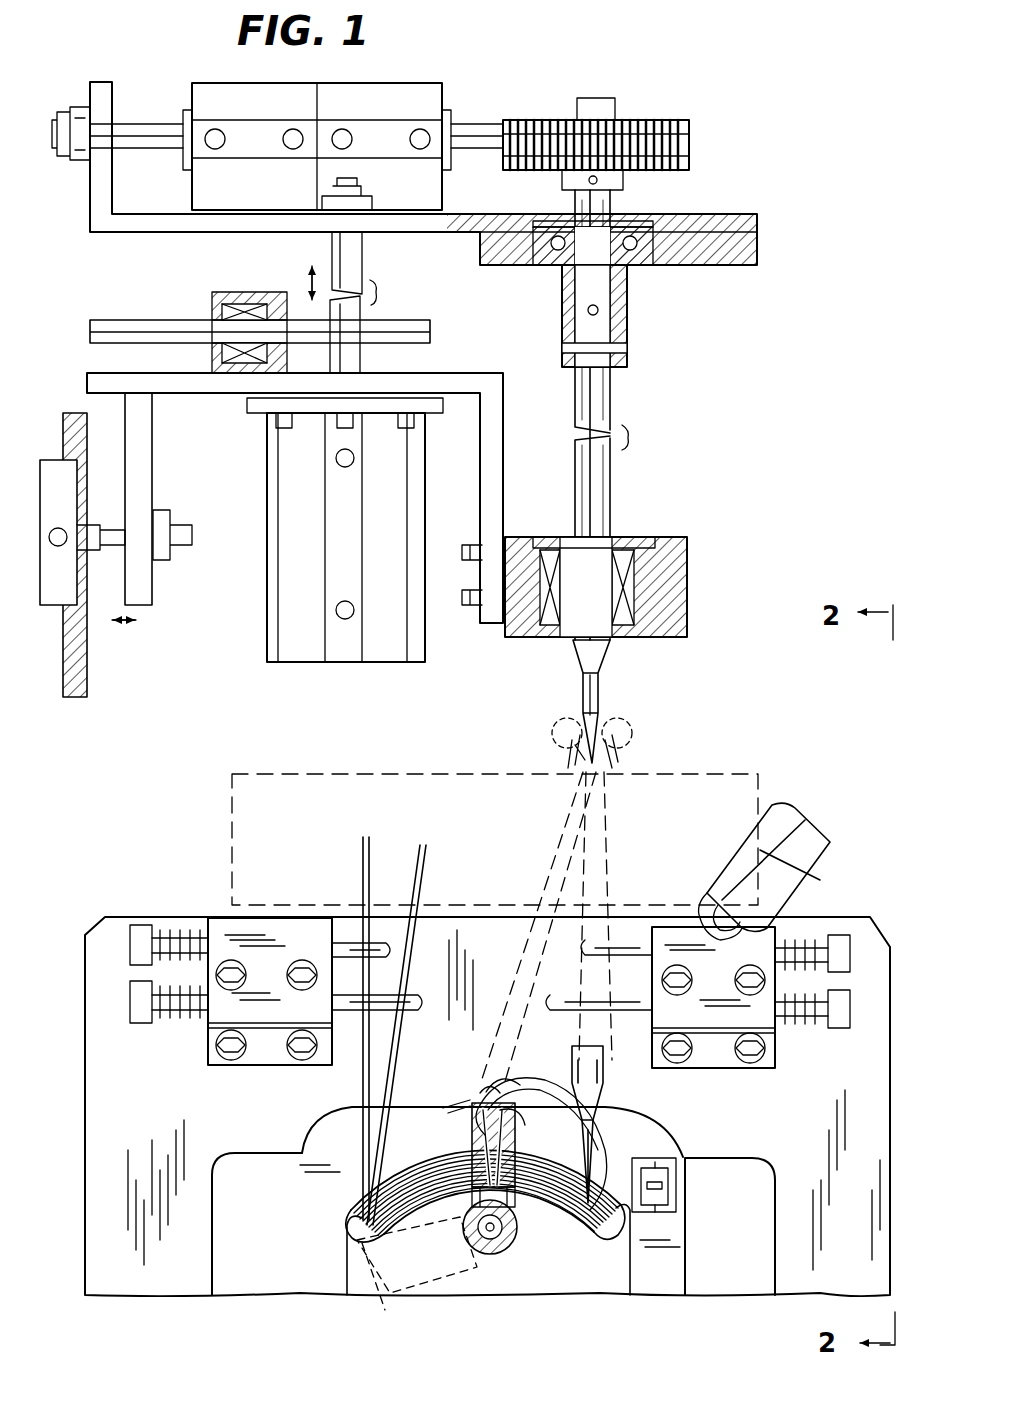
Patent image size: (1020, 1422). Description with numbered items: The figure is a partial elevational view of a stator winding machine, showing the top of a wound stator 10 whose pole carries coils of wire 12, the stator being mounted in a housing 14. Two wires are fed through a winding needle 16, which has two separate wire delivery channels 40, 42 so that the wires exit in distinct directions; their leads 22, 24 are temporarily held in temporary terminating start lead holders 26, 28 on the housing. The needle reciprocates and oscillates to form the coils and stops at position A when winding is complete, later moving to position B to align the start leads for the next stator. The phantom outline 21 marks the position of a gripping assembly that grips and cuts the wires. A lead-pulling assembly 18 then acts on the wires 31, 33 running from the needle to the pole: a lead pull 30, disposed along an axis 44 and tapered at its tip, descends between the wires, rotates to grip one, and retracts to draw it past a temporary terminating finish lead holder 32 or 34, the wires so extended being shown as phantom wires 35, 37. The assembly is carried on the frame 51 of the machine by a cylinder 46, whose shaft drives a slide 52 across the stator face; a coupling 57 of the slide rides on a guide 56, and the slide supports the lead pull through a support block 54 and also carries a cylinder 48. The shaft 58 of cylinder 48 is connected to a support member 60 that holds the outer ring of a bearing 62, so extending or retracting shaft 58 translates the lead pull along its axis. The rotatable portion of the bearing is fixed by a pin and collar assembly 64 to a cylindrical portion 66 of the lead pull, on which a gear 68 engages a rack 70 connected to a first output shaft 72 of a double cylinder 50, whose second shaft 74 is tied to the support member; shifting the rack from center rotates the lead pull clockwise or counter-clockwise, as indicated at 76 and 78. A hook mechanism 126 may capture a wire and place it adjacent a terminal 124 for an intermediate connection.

The stator 10 is at (330, 1140).
The coils of wire 12 is at (600, 1296).
The housing 14 is at (98, 930).
The winding needle 16 is at (472, 1100).
The lead-pulling assembly 18 is at (742, 338).
The phantom position of gripping assembly 21 is at (232, 810).
The lead 22 is at (362, 853).
The lead 24 is at (428, 860).
The temporary terminating start lead holder 26 is at (343, 932).
The temporary terminating start lead holder 28 is at (425, 1013).
The lead pull 30 is at (606, 694).
The wire 31 is at (620, 1152).
The temporary terminating finish lead holder 32 is at (628, 932).
The wire 33 is at (572, 1140).
The temporary terminating finish lead holder 34 is at (640, 1040).
The phantom wire 35 is at (611, 813).
The phantom wire 37 is at (585, 853).
The wire delivery channel 40 is at (480, 1098).
The wire delivery channel 42 is at (508, 1100).
The axis 44 is at (575, 434).
The cylinder 46 is at (48, 610).
The cylinder 48 is at (310, 663).
The double cylinder 50 is at (231, 192).
The frame 51 is at (90, 655).
The slide 52 is at (500, 488).
The support block 54 is at (688, 578).
The guide 56 is at (176, 330).
The coupling 57 is at (252, 292).
The shaft 58 is at (362, 258).
The support member 60 is at (430, 228).
The bearing 62 is at (655, 250).
The pin and collar assembly 64 is at (660, 360).
The cylindrical portion 66 is at (600, 300).
The gear 68 is at (638, 176).
The rack 70 is at (690, 162).
The first output shaft 72 is at (486, 146).
The second shaft 74 is at (142, 142).
The clockwise rotation 76 is at (556, 727).
The counter-clockwise rotation 78 is at (625, 722).
The terminal 124 is at (682, 1175).
The hook mechanism 126 is at (805, 865).
The position A is at (470, 1133).
The position B is at (400, 1310).